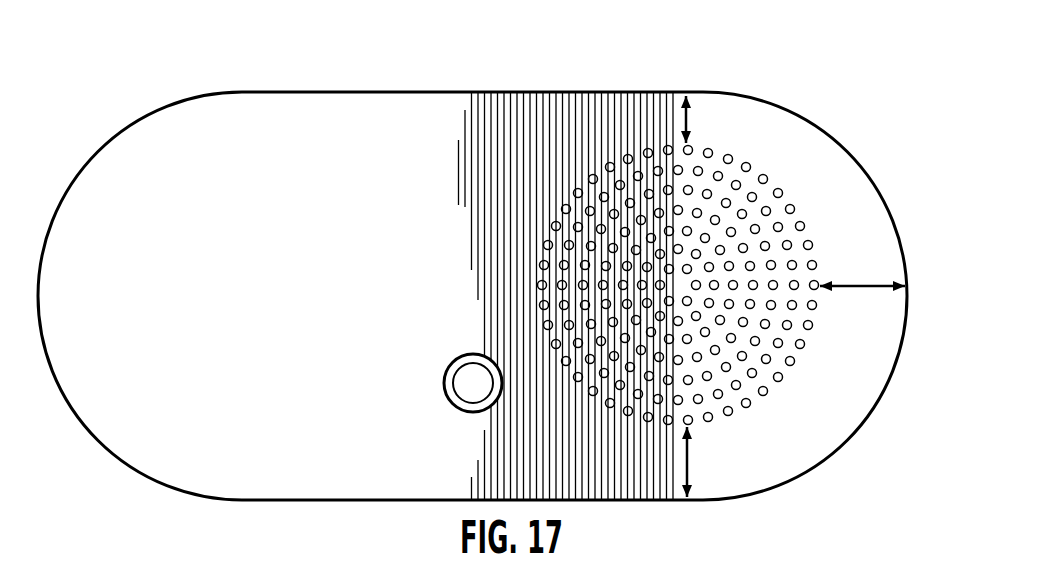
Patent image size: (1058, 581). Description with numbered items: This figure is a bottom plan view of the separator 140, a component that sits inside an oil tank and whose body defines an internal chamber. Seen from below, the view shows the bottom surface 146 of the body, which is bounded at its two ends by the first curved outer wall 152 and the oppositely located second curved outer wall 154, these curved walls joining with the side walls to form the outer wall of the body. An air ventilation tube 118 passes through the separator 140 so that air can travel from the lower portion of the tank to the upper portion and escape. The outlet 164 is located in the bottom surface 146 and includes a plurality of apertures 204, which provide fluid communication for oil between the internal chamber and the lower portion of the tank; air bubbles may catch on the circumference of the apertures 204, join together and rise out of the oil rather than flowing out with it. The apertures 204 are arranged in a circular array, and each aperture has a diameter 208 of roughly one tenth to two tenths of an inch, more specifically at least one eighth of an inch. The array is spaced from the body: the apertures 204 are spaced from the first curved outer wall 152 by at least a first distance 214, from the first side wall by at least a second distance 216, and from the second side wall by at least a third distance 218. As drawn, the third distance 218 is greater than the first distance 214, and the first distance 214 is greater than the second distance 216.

The separator 140 is at (881, 117).
The bottom surface 146 is at (222, 347).
The first curved outer wall 152 is at (896, 386).
The second curved outer wall 154 is at (48, 202).
The air ventilation tube 118 is at (445, 387).
The outlet 164 is at (616, 412).
The apertures 204 is at (782, 379).
The diameter 208 is at (738, 207).
The first distance 214 is at (859, 286).
The second distance 216 is at (688, 463).
The third distance 218 is at (692, 120).